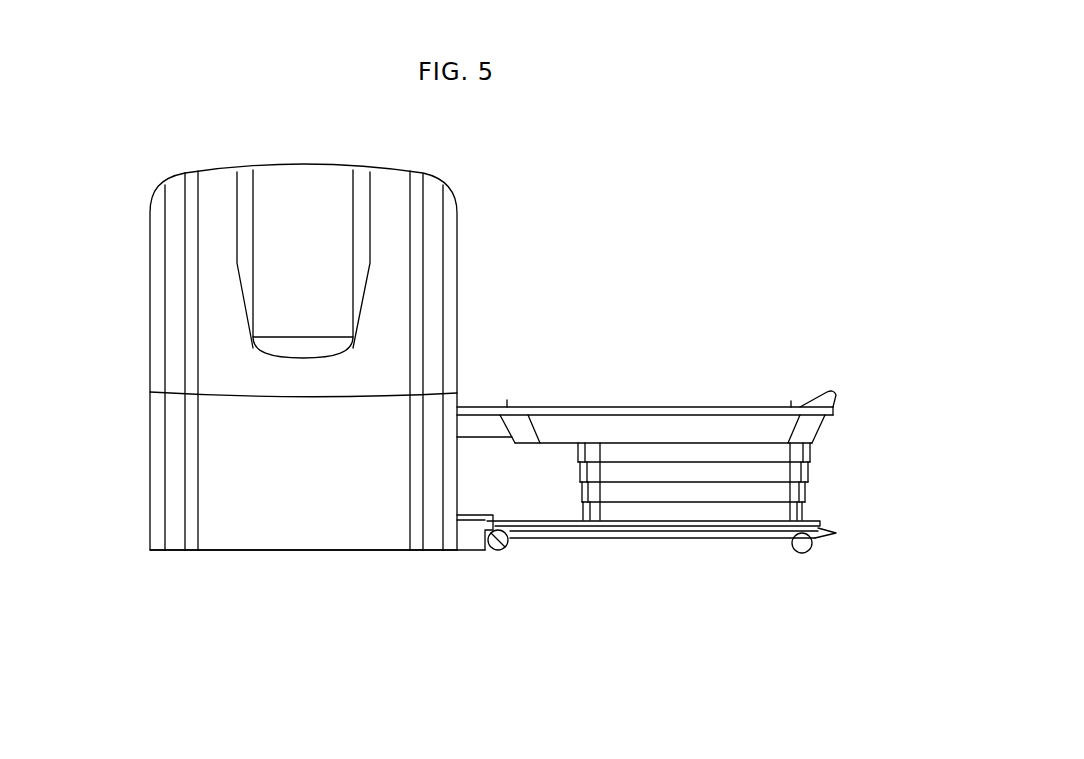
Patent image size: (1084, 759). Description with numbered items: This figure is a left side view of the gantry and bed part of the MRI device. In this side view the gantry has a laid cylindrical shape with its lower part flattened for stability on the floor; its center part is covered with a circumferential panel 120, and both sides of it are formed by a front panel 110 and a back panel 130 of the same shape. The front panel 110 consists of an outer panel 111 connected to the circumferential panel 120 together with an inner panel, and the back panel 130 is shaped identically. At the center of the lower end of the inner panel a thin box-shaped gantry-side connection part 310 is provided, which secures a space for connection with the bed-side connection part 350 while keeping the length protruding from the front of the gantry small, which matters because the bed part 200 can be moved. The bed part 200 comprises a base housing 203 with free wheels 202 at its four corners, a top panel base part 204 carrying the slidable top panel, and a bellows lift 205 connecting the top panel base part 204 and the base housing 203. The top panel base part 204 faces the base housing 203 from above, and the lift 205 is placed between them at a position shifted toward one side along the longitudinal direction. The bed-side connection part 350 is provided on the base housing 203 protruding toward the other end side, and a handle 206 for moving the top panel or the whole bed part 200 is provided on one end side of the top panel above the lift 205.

The front panel 110 is at (345, 368).
The outer panel 111 is at (432, 520).
The circumferential panel 120 is at (323, 520).
The back panel 130 is at (172, 226).
The bed part 200 is at (670, 438).
The free wheels 202 is at (802, 552).
The base housing 203 is at (683, 532).
The top panel base part 204 is at (592, 407).
The bellows lift 205 is at (810, 477).
The handle 206 is at (818, 400).
The gantry-side connection part 310 is at (475, 540).
The bed-side connection part 350 is at (505, 552).